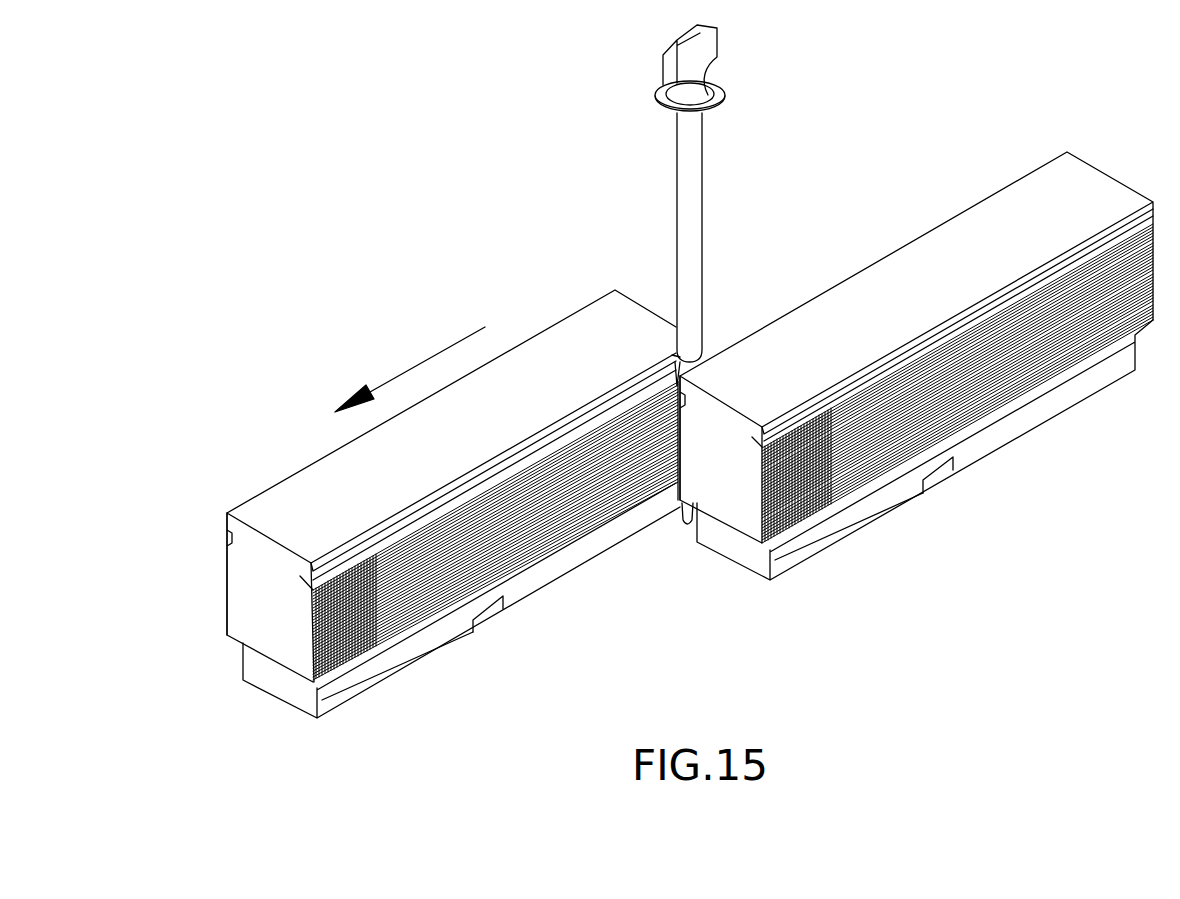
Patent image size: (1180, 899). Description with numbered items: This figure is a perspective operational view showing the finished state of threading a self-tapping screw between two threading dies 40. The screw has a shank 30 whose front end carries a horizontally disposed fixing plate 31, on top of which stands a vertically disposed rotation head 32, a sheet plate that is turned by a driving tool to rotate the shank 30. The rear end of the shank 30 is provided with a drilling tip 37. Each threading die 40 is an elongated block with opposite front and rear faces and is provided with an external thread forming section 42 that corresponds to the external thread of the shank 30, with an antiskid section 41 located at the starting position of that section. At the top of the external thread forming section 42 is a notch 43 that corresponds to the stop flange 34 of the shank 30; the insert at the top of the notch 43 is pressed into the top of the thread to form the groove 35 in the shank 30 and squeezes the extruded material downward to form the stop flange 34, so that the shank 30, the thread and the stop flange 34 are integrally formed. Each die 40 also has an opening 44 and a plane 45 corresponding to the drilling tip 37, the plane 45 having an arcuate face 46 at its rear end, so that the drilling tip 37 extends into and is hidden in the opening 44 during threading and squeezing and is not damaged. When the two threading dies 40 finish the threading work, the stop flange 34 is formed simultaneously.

The shank 30 is at (693, 196).
The fixing plate 31 is at (672, 112).
The rotation head 32 is at (694, 66).
The stop flange 34 is at (676, 372).
The groove 35 is at (675, 356).
The drilling tip 37 is at (686, 521).
The threading die 40 is at (296, 503).
The antiskid section 41 is at (311, 612).
The external thread forming section 42 is at (530, 547).
The notch 43 is at (308, 581).
The opening 44 is at (342, 682).
The plane 45 is at (397, 667).
The arcuate face 46 is at (480, 618).